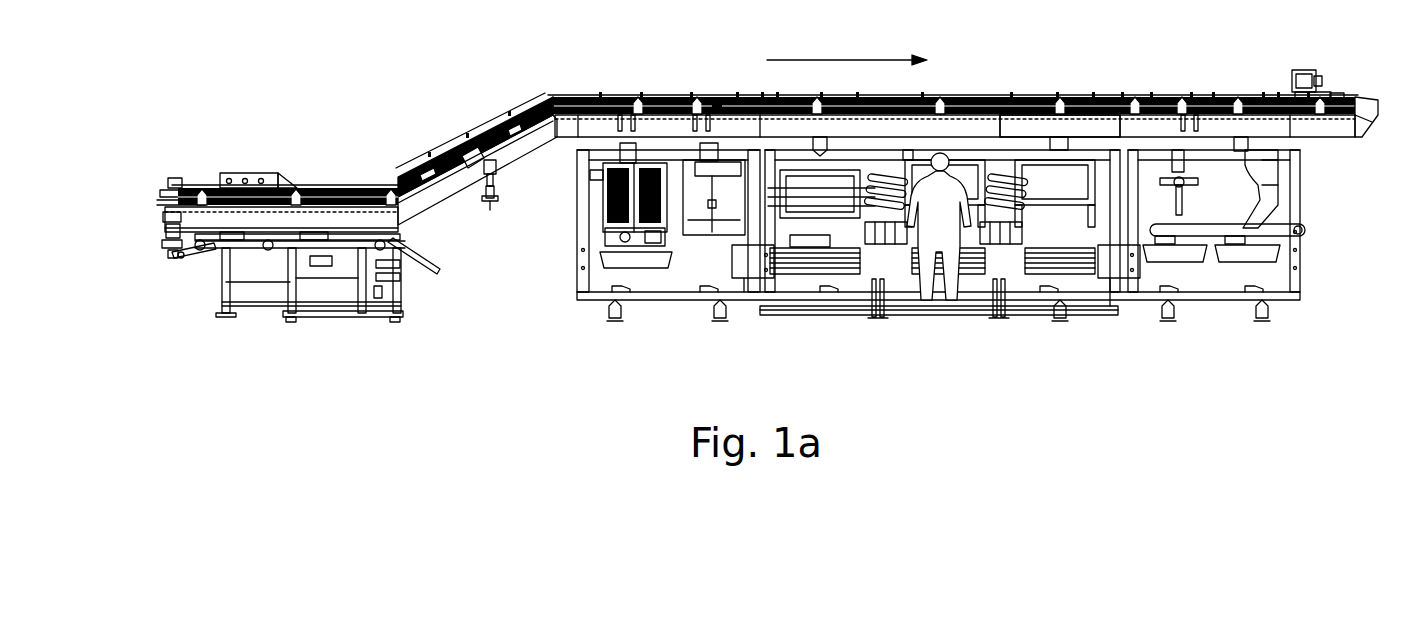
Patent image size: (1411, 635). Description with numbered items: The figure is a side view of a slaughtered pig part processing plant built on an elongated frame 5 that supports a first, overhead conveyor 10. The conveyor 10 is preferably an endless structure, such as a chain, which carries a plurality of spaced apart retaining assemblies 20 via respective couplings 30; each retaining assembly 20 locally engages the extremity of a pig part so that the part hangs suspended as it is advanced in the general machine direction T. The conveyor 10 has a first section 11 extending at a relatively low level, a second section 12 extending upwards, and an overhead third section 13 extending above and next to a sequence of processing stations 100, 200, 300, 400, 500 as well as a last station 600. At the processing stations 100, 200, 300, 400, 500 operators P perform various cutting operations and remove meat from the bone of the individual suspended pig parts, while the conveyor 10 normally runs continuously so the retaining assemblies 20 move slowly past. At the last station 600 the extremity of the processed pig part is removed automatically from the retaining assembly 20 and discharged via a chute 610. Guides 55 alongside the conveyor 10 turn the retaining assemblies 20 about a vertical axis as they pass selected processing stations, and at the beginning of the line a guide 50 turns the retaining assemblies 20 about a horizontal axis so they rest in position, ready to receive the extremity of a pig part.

The elongated frame 5 is at (585, 270).
The first conveyor 10 is at (622, 78).
The first section 11 is at (347, 220).
The second section 12 is at (455, 154).
The third section 13 is at (1030, 130).
The retaining assembly 20 is at (490, 202).
The coupling 30 is at (491, 178).
The guide 50 is at (183, 260).
The guide 55 is at (516, 115).
The processing station 100 is at (655, 315).
The processing station 200 is at (732, 265).
The processing station 300 is at (828, 336).
The processing station 400 is at (988, 332).
The processing station 500 is at (1108, 332).
The last station 600 is at (1267, 238).
The chute 610 is at (1268, 167).
The operator P is at (950, 307).
The machine direction T is at (847, 47).